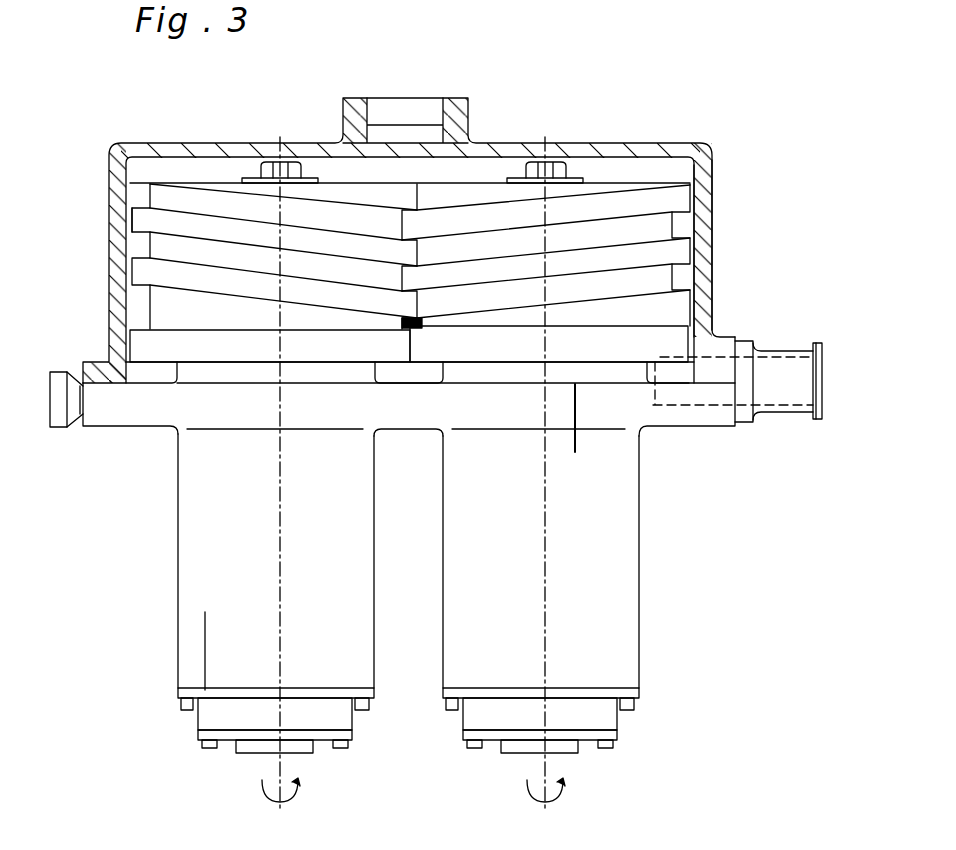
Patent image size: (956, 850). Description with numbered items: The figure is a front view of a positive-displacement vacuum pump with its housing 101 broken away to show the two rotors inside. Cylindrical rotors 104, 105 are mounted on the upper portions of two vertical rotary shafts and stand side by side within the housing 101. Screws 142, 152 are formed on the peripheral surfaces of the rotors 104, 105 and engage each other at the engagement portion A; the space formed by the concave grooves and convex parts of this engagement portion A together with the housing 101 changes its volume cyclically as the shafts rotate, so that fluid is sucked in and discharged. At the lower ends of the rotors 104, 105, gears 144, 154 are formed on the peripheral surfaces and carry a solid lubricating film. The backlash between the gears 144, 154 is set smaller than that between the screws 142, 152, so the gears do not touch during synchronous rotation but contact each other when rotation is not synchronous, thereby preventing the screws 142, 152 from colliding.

The housing 101 is at (717, 174).
The cylindrical rotor 104 is at (624, 182).
The cylindrical rotor 105 is at (222, 180).
The screw 142 is at (696, 221).
The gear 144 is at (690, 351).
The screw 152 is at (131, 242).
The gear 154 is at (109, 343).
The engagement portion A is at (424, 182).